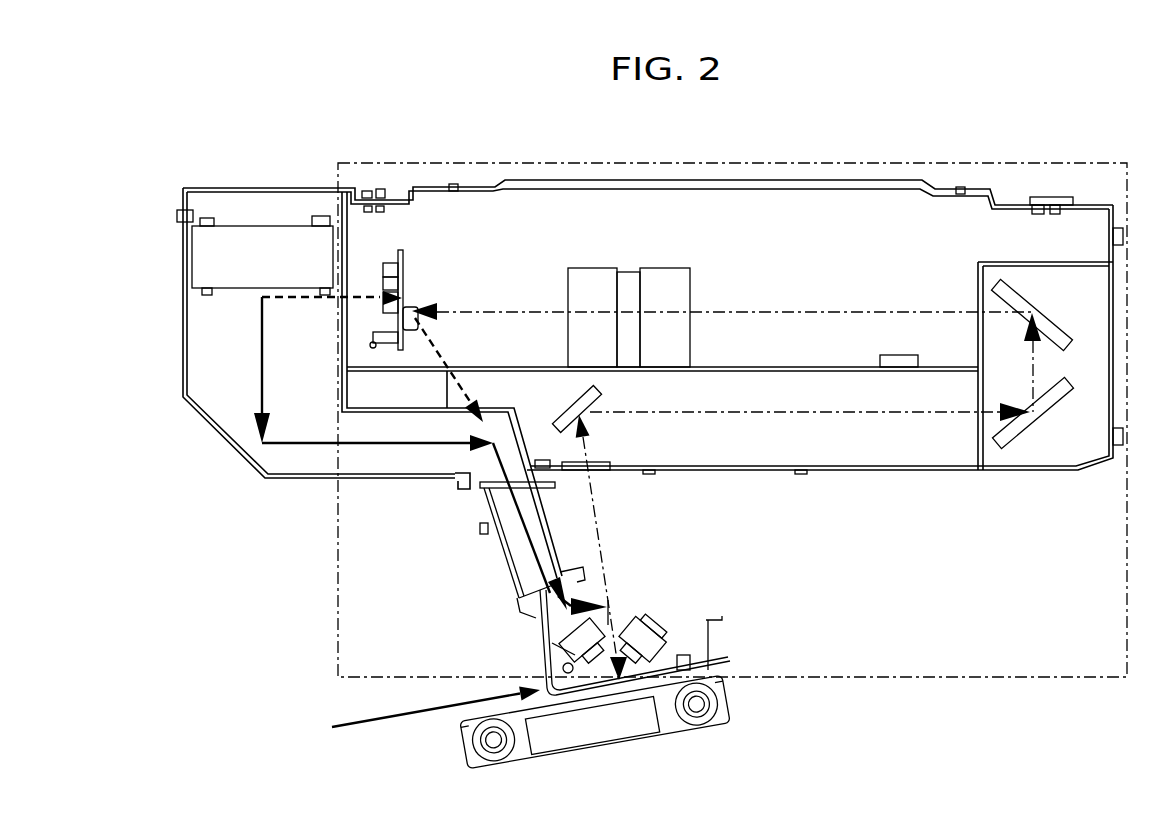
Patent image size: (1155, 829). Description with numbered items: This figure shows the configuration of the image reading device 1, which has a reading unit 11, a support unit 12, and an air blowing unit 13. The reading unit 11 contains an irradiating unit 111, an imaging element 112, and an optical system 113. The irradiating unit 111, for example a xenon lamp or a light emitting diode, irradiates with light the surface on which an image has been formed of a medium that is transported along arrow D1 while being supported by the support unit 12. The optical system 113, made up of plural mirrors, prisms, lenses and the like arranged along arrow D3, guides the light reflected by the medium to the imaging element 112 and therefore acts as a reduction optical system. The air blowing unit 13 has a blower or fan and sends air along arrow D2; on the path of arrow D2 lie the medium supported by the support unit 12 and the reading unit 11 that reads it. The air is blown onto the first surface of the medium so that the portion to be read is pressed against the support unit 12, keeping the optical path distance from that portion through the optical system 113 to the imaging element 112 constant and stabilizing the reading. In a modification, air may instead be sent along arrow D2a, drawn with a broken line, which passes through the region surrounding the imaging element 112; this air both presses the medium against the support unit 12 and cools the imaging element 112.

The image reading device 1 is at (265, 637).
The reading unit 11 is at (338, 575).
The support unit 12 is at (724, 710).
The air blowing unit 13 is at (297, 225).
The irradiating unit 111 is at (650, 630).
The imaging element 112 is at (405, 268).
The optical system 113 is at (630, 272).
The arrow D1 is at (336, 723).
The arrow D2 is at (262, 367).
The arrow D2a is at (369, 297).
The arrow D3 is at (882, 416).